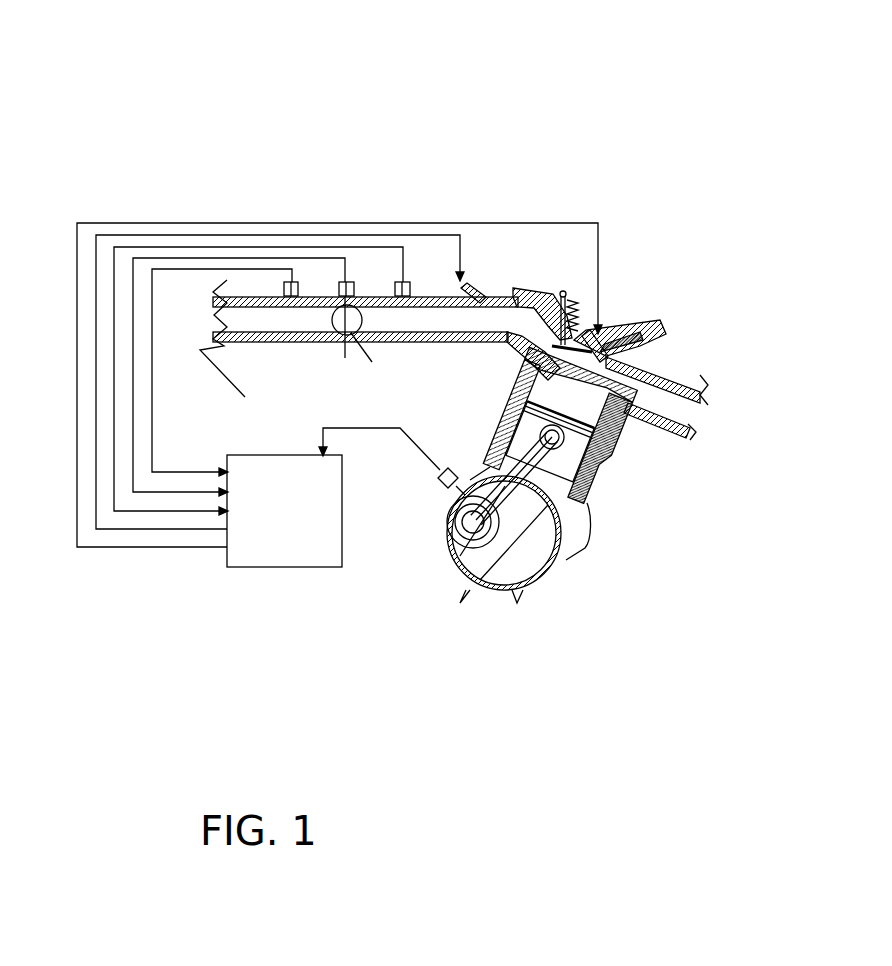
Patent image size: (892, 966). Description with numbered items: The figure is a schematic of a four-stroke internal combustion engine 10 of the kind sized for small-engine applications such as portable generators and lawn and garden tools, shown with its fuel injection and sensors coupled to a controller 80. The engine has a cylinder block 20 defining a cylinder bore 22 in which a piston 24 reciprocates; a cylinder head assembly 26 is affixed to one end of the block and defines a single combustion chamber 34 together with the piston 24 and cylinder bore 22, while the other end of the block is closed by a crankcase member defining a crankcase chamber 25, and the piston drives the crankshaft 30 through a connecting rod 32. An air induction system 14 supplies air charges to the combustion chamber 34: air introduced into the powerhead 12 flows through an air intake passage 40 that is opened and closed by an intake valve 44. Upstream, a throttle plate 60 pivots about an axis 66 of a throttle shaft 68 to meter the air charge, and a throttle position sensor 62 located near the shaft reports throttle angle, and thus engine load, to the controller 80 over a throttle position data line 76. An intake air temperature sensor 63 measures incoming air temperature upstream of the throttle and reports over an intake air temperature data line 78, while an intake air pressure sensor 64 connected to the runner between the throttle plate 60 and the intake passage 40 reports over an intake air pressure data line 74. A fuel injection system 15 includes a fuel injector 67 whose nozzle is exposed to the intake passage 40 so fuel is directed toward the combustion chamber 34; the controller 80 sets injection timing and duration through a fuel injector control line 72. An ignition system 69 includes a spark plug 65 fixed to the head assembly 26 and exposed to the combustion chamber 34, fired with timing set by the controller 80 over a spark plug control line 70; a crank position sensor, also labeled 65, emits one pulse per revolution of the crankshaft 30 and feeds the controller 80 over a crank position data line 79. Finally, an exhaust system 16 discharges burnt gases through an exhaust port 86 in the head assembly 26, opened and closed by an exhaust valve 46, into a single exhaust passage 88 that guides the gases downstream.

The internal combustion engine 10 is at (580, 660).
The powerhead 12 is at (692, 270).
The air induction system 14 is at (359, 130).
The fuel injection system 15 is at (514, 130).
The exhaust system 16 is at (697, 500).
The cylinder block 20 is at (515, 382).
The cylinder bore 22 is at (617, 443).
The piston 24 is at (522, 425).
The crankcase chamber 25 is at (567, 547).
The cylinder head assembly 26 is at (628, 338).
The crankshaft 30 is at (505, 556).
The connecting rod 32 is at (520, 470).
The combustion chamber 34 is at (570, 398).
The air intake passage 40 is at (538, 292).
The intake valve 44 is at (568, 292).
The exhaust valve 46 is at (657, 337).
The throttle plate 60 is at (332, 322).
The throttle position sensor 62 is at (351, 282).
The intake air temperature sensor 63 is at (287, 282).
The intake air pressure sensor 64 is at (407, 282).
The spark plug 65 is at (606, 332).
The axis 66 is at (345, 358).
The fuel injector 67 is at (467, 285).
The throttle shaft 68 is at (372, 362).
The ignition system 69 is at (616, 238).
The spark plug control line 70 is at (100, 545).
The fuel injector control line 72 is at (130, 532).
The intake air pressure data line 74 is at (160, 514).
The throttle position data line 76 is at (192, 497).
The intake air temperature data line 78 is at (205, 474).
The crank position data line 79 is at (373, 430).
The controller 80 is at (297, 528).
The exhaust port 86 is at (672, 396).
The exhaust passage 88 is at (705, 397).